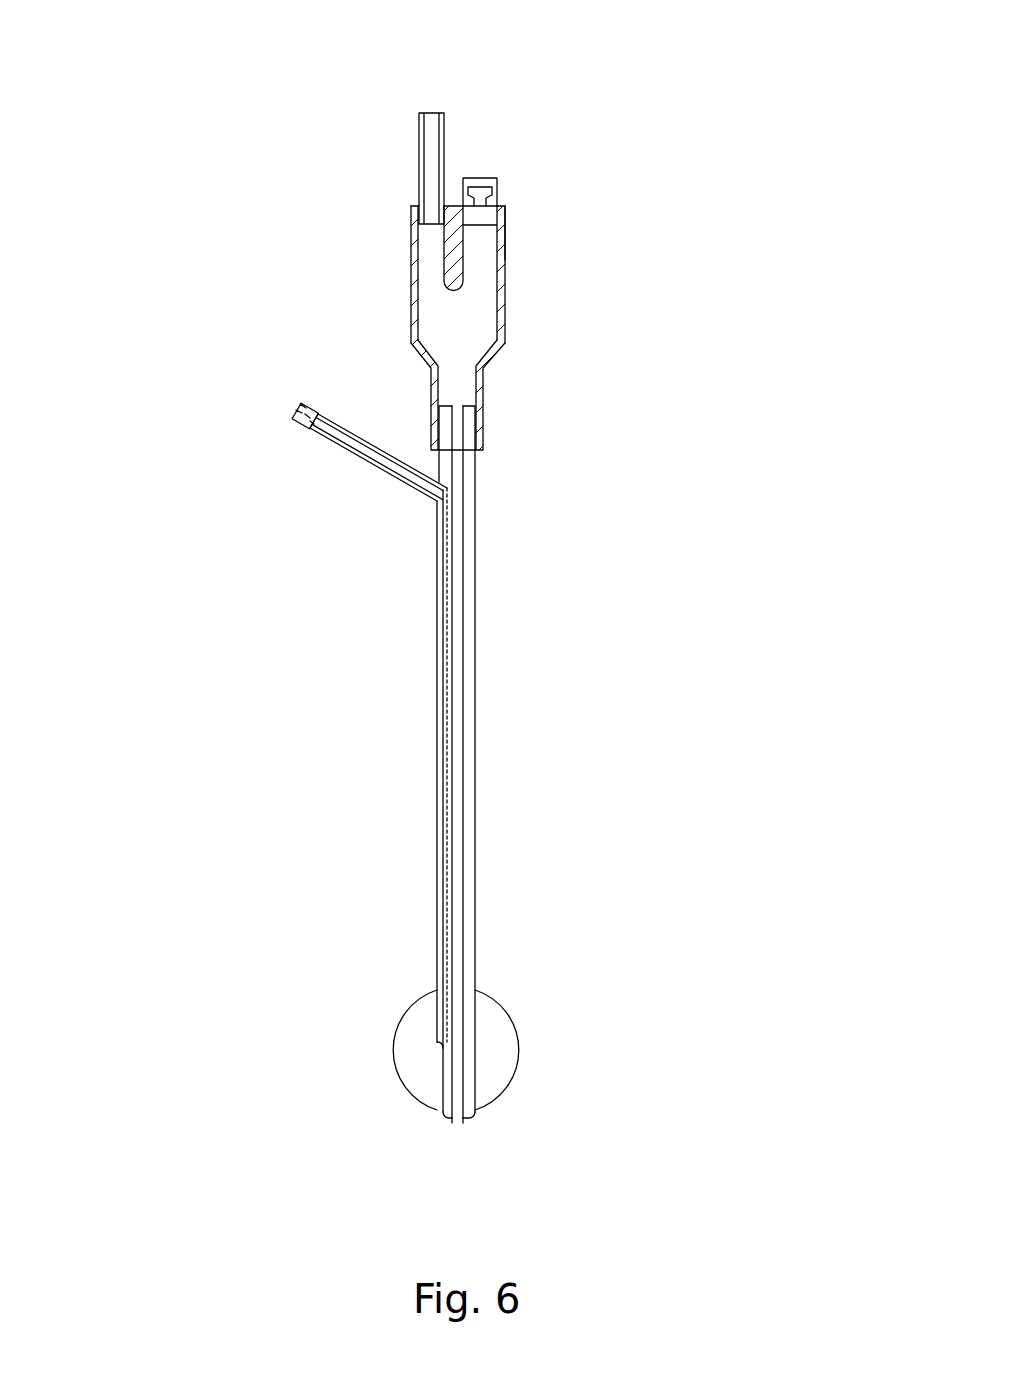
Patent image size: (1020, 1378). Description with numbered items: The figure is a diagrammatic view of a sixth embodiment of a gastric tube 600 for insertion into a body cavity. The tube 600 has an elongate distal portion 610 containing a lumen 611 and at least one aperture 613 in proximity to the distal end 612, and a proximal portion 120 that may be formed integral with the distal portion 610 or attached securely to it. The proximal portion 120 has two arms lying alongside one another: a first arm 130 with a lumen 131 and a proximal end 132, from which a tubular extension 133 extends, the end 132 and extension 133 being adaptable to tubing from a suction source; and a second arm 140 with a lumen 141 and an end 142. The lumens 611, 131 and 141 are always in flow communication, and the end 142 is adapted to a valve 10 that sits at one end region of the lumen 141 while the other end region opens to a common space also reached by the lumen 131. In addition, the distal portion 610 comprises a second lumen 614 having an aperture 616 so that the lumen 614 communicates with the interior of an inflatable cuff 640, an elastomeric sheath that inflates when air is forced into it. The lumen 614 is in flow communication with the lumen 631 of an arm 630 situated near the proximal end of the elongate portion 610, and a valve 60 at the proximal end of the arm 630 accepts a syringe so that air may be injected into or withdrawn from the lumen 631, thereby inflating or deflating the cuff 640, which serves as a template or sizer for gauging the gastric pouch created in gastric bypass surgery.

The gastric tube 600 is at (438, 814).
The elongate distal portion 610 is at (437, 815).
The lumen 611 is at (460, 921).
The distal end 612 is at (443, 1113).
The aperture 613 is at (457, 1127).
The second lumen 614 is at (445, 638).
The aperture 616 is at (438, 1046).
The arm 630 is at (333, 448).
The lumen 631 is at (367, 453).
The inflatable cuff 640 is at (520, 1050).
The valve 60 is at (293, 410).
The valve 10 is at (480, 178).
The proximal portion 120 is at (410, 317).
The first arm 130 is at (410, 270).
The lumen 131 is at (430, 252).
The proximal end 132 is at (412, 207).
The extension 133 is at (420, 133).
The second arm 140 is at (505, 270).
The lumen 141 is at (482, 252).
The end 142 is at (505, 222).